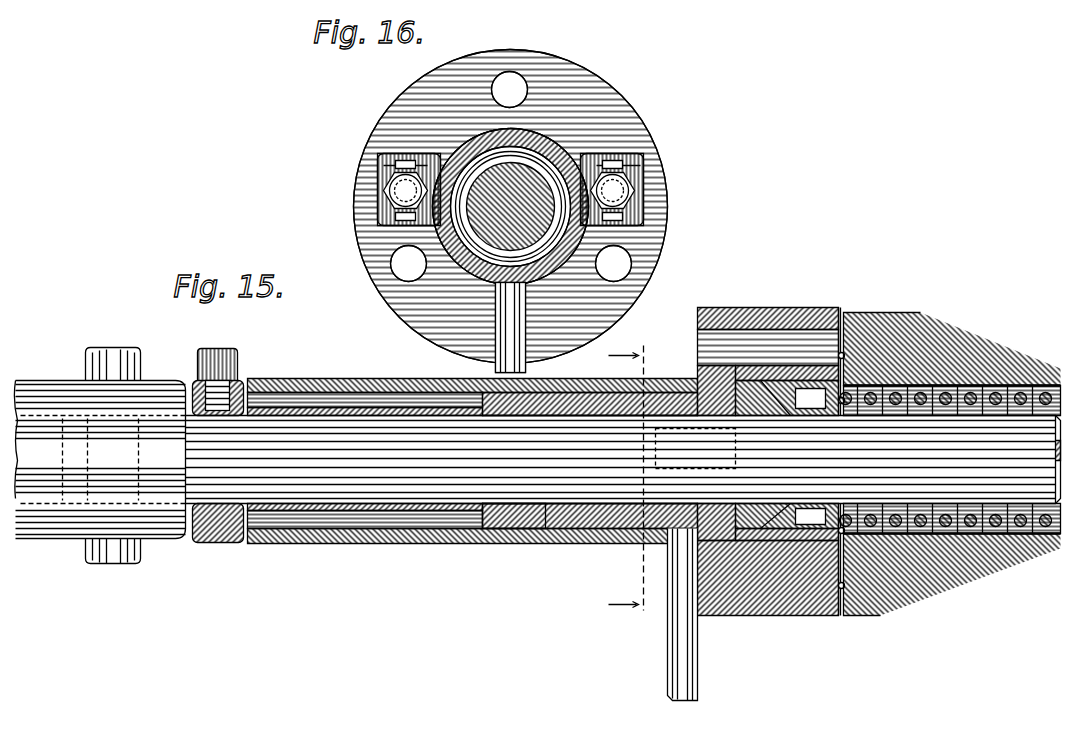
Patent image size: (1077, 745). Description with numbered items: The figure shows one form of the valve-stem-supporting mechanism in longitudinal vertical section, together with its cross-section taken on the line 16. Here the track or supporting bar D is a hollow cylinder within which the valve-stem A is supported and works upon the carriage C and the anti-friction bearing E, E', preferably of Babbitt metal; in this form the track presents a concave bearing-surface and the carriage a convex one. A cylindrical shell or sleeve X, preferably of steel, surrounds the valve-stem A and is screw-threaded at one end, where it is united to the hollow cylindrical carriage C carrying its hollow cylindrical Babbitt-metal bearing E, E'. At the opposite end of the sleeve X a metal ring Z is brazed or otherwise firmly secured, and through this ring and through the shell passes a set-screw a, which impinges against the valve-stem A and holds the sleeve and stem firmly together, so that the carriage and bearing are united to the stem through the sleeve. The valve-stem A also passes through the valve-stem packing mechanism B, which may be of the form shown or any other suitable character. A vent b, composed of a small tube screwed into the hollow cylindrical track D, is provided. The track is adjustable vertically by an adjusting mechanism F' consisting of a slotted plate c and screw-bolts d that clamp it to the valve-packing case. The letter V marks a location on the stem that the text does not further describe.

In FIG. 16, the valve-stem A is at (511, 207).
In FIG. 15, the valve-stem A is at (623, 460).
In FIG. 15, the set-screw a is at (217, 347).
In FIG. 15, the metal ring Z is at (220, 542).
In FIG. 15, the track or supporting bar D is at (355, 378).
In FIG. 16, the cylindrical shell or sleeve X is at (470, 262).
In FIG. 15, the cylindrical shell or sleeve X is at (358, 510).
In FIG. 15, the anti-friction bearing E is at (590, 389).
In FIG. 15, the anti-friction bearing E' is at (590, 536).
In FIG. 15, the valve-stem carriage C is at (533, 528).
In FIG. 15, the shoulder V is at (490, 416).
In FIG. 16, the screw-bolts d is at (509, 191).
In FIG. 15, the screw-bolts d is at (654, 440).
In FIG. 15, the valve-stem packing mechanism B is at (752, 415).
In FIG. 16, the vent b is at (494, 322).
In FIG. 15, the vent b is at (666, 678).
In FIG. 15, the section line 16 is at (631, 480).
In FIG. 16, the adjusting mechanism F' is at (488, 190).
In FIG. 16, the slotted plate c is at (512, 160).